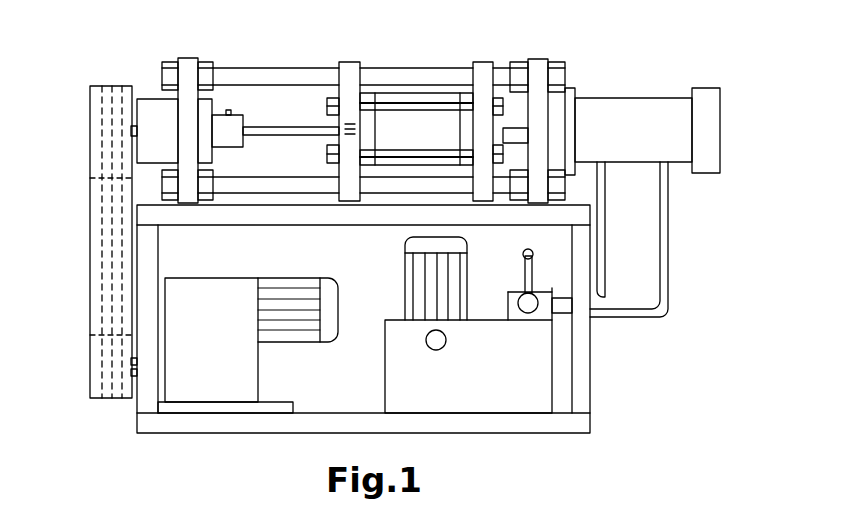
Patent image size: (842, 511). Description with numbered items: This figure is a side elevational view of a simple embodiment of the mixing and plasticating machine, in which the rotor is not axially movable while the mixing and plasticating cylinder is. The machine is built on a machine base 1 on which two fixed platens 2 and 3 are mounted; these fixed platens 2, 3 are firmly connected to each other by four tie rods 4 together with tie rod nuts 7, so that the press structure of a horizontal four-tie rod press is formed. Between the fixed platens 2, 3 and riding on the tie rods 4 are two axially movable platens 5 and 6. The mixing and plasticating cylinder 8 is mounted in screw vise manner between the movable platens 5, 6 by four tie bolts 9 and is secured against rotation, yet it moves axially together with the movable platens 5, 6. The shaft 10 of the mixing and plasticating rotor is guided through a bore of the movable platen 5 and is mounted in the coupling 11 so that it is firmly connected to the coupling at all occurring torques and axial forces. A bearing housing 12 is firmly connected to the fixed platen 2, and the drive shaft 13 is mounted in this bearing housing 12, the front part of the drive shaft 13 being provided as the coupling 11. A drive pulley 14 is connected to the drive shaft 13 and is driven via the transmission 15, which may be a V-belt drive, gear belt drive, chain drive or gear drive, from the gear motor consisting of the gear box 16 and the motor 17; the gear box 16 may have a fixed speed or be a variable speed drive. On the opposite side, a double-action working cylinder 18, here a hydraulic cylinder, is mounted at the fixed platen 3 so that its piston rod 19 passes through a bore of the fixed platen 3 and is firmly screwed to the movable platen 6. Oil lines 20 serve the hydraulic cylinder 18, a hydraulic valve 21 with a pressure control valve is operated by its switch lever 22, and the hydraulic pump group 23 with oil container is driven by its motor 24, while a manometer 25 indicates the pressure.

The machine base 1 is at (303, 215).
The fixed platen 2 is at (183, 65).
The fixed platen 3 is at (535, 65).
The tie rods 4 is at (240, 80).
The axially movable platen 5 is at (343, 68).
The axially movable platen 6 is at (480, 67).
The tie rod nuts 7 is at (173, 67).
The mixing and plasticating cylinder 8 is at (422, 97).
The tie bolts 9 is at (394, 156).
The shaft of the mixing and plasticating rotor 10 is at (267, 130).
The coupling 11 is at (230, 118).
The bearing housing 12 is at (172, 112).
The drive shaft 13 is at (131, 131).
The drive pulley 14 is at (110, 120).
The transmission 15 is at (112, 263).
The gear box 16 is at (217, 355).
The motor 17 is at (270, 287).
The double-action working cylinder 18 is at (618, 127).
The piston rod 19 is at (513, 133).
The oil lines 20 is at (667, 252).
The hydraulic valve 21 is at (517, 300).
The switch lever 22 is at (523, 252).
The hydraulic pump group 23 is at (515, 343).
The motor of the hydraulic pump group 24 is at (417, 300).
The manometer 25 is at (440, 344).